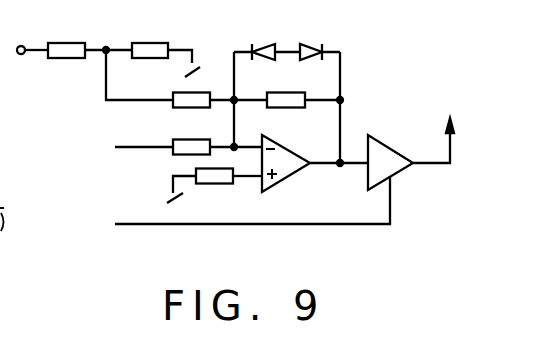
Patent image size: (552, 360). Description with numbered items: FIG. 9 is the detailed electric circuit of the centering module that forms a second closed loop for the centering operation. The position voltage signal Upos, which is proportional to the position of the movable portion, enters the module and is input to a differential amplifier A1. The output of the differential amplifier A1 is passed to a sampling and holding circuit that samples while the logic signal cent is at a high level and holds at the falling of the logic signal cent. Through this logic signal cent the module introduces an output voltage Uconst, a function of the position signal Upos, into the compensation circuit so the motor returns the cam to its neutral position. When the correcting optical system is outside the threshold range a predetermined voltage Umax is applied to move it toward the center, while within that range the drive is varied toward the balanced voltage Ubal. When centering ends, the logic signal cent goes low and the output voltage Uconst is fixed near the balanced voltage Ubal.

The balanced voltage Ubal is at (142, 61).
The predetermined voltage Umax is at (288, 89).
The position voltage signal Upos is at (163, 147).
The differential amplifier A1 is at (267, 169).
The output voltage Uconst is at (432, 128).
The logic signal cent is at (231, 205).